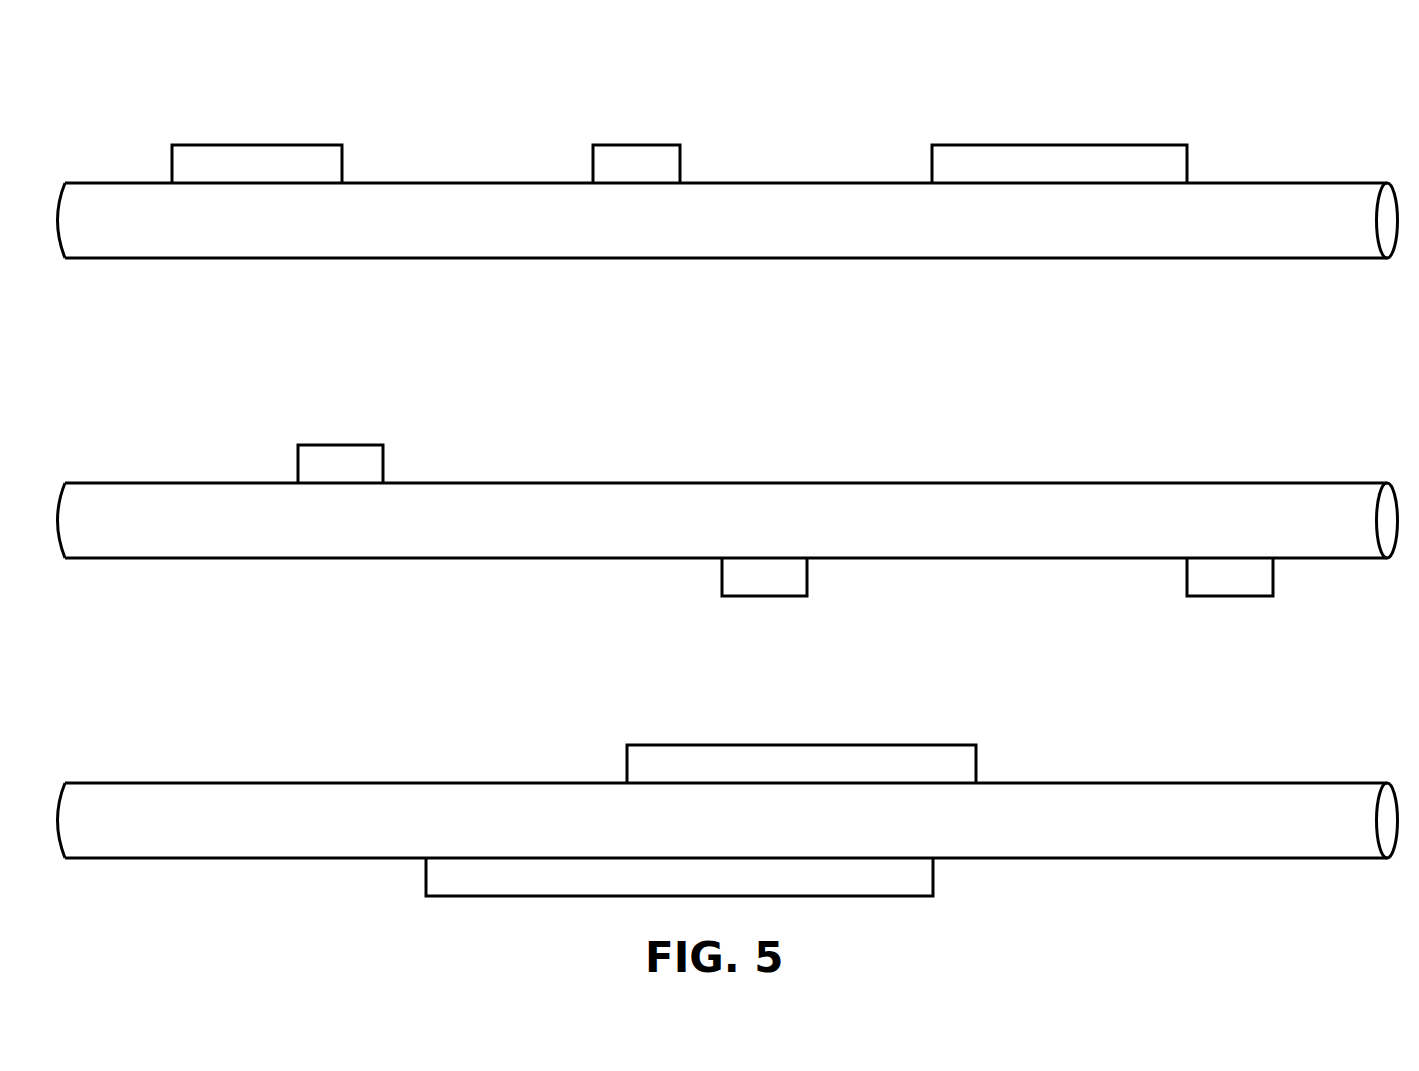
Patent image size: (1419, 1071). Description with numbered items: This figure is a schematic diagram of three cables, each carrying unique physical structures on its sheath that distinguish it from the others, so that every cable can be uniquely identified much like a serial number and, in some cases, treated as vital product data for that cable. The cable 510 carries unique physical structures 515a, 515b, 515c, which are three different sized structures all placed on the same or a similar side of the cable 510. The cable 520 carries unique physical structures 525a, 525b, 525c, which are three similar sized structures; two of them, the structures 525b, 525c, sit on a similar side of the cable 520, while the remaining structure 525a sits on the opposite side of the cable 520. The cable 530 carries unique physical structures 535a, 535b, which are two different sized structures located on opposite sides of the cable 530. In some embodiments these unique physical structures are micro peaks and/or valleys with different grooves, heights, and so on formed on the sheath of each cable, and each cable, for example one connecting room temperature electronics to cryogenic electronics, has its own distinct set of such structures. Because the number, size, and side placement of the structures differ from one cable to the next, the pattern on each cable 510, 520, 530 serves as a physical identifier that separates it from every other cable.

The cable 510 is at (743, 234).
The unique physical structure 515a is at (257, 143).
The unique physical structure 515b is at (635, 143).
The unique physical structure 515c is at (1063, 143).
The cable 520 is at (743, 534).
The unique physical structure 525a is at (337, 443).
The unique physical structure 525b is at (763, 598).
The unique physical structure 525c is at (1232, 598).
The cable 530 is at (743, 834).
The unique physical structure 535a is at (417, 877).
The unique physical structure 535b is at (800, 743).